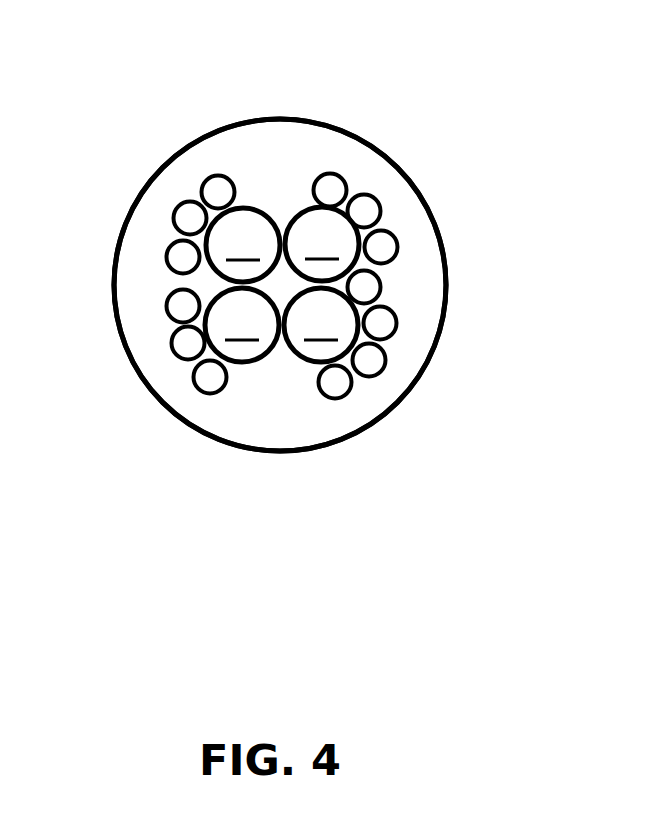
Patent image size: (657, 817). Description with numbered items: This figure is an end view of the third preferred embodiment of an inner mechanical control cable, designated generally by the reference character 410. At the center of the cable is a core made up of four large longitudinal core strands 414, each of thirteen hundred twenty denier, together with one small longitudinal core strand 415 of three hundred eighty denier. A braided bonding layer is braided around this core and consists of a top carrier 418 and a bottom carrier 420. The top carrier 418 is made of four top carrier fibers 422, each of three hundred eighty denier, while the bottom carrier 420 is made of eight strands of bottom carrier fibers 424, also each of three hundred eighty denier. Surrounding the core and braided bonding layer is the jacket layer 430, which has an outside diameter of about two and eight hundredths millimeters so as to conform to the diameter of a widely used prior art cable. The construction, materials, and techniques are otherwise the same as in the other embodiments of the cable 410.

The third preferred embodiment of the inner mechanical control cable 410 is at (522, 128).
The jacket layer 430 is at (277, 132).
The large longitudinal core strands 414 is at (282, 284).
The small longitudinal core strand 415 is at (373, 283).
The top carrier 418 is at (224, 412).
The bottom carrier 420 is at (320, 414).
The top carrier fibers 422 is at (129, 269).
The bottom carrier fibers 424 is at (420, 273).